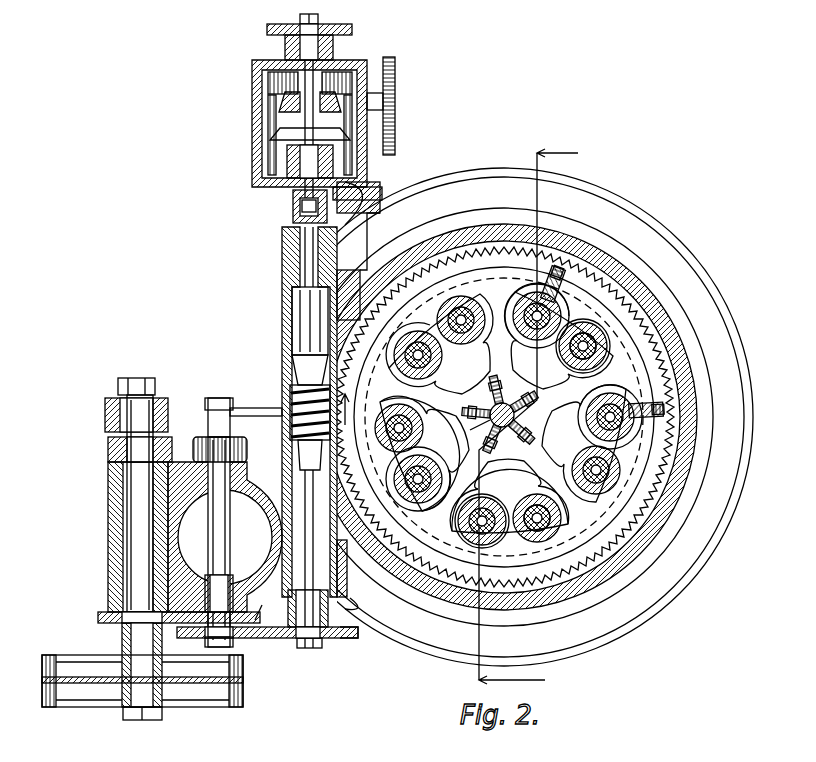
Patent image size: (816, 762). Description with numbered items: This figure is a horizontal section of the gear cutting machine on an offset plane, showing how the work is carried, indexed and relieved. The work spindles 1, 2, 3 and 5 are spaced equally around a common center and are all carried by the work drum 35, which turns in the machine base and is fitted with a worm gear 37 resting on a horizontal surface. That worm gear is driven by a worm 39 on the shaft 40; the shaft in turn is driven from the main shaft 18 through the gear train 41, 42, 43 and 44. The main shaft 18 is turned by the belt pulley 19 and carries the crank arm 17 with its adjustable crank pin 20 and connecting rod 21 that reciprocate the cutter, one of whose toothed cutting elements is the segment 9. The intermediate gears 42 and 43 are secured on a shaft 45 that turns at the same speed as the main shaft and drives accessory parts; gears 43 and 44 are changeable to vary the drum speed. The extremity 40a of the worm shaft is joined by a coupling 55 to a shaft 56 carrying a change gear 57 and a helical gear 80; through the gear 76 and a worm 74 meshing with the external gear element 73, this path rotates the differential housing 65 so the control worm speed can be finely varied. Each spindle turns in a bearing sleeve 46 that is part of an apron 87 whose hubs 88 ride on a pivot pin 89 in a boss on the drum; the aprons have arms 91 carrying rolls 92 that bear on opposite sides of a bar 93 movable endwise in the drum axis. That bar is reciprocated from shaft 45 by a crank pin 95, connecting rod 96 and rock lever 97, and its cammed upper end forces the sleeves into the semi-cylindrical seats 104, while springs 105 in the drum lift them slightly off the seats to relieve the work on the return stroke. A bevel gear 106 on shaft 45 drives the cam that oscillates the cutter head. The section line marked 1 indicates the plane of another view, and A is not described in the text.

The work spindle 1 is at (620, 395).
The work spindle 2 is at (550, 538).
The work spindle 3 is at (412, 503).
The work spindle 5 is at (530, 312).
The carrier arm A is at (410, 365).
The cutting element 9 is at (300, 17).
The crank arm 17 is at (110, 452).
The main shaft 18 is at (140, 523).
The belt pulley 19 is at (58, 657).
The crank pin 20 is at (130, 418).
The connecting rod 21 is at (108, 408).
The work drum 35 is at (440, 522).
The worm gear 37 is at (320, 331).
The worm 39 is at (292, 395).
The shaft 40 is at (315, 588).
The extremity of shaft 40a is at (300, 233).
The gear 41 is at (105, 614).
The intermediate gear 42 is at (258, 634).
The intermediate gear 43 is at (255, 622).
The gear 44 is at (348, 639).
The shaft 45 is at (228, 545).
The bearing 46 is at (416, 340).
The coupling 55 is at (295, 203).
The shaft 56 is at (300, 134).
The gear 57 is at (272, 30).
The housing 65 is at (300, 123).
The external gear element 73 is at (282, 103).
The worm 74 is at (318, 97).
The gear 76 is at (395, 85).
The helical gear 80 is at (300, 149).
The apron 87 is at (515, 420).
The bearing hub 88 is at (592, 346).
The pivot pin 89 is at (588, 332).
The arm 91 is at (520, 368).
The roll 92 is at (492, 398).
The bar 93 is at (478, 430).
The crank pin 95 is at (212, 404).
The connecting rod 96 is at (203, 438).
The rock lever 97 is at (255, 416).
The seat 104 is at (548, 300).
The spring 105 is at (540, 276).
The bevel gear 106 is at (236, 582).